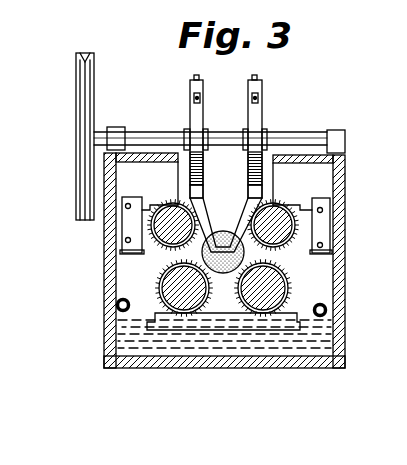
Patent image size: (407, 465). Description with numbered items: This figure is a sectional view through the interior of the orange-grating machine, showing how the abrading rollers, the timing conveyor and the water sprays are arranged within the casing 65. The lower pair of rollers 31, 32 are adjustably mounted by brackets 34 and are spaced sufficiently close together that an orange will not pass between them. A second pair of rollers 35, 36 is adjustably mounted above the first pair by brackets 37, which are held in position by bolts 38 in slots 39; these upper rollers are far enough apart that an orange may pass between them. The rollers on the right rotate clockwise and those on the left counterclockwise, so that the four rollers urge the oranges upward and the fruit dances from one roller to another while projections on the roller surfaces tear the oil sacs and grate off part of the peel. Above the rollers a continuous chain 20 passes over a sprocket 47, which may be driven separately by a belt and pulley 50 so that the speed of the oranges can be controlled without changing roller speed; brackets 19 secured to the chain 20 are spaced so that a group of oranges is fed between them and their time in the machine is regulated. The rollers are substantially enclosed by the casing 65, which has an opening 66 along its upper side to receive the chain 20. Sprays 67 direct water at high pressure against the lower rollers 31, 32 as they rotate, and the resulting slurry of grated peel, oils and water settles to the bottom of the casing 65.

The bracket 19 is at (208, 210).
The continuous chain 20 is at (201, 192).
The lower roller 31 is at (287, 290).
The lower roller 32 is at (160, 285).
The bracket 34 is at (104, 338).
The upper roller 35 is at (277, 208).
The upper roller 36 is at (168, 208).
The bracket 37 is at (140, 180).
The bolt 38 is at (121, 252).
The slot 39 is at (122, 236).
The sprocket 47 is at (248, 97).
The pulley 50 is at (77, 90).
The casing 65 is at (335, 158).
The opening 66 is at (185, 140).
The spray 67 is at (116, 307).